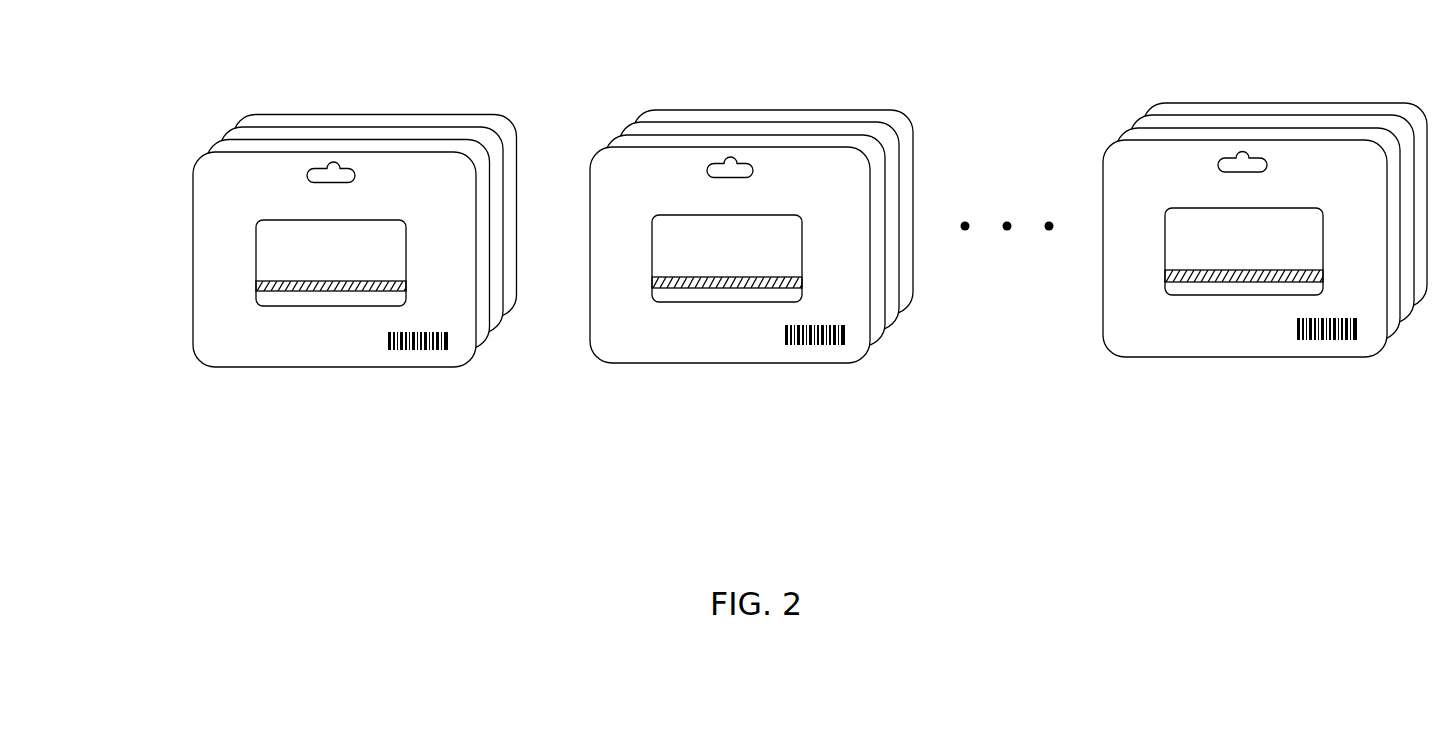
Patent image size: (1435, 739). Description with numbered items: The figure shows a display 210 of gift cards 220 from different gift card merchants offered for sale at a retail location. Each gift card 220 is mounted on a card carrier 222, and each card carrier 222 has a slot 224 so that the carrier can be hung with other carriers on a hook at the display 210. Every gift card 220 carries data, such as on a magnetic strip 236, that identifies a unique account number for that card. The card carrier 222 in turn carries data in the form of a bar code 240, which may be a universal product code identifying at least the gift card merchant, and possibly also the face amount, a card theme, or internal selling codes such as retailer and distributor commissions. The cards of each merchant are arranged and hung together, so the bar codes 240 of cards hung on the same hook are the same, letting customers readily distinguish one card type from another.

The display 210 is at (208, 507).
The gift card 220 is at (366, 220).
The card carrier 222 is at (317, 351).
The slot 224 is at (334, 166).
The magnetic strip 236 is at (257, 291).
The bar code 240 is at (448, 348).